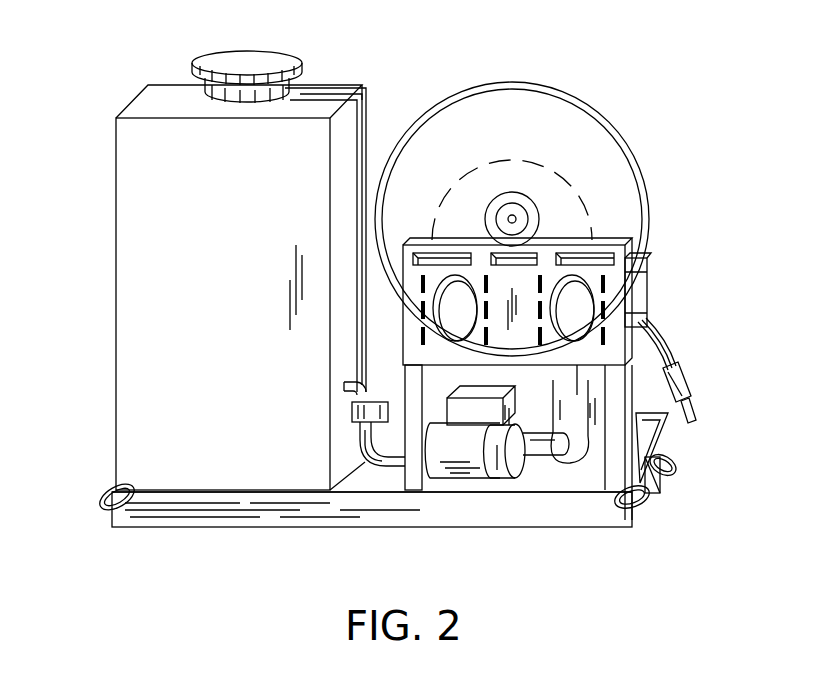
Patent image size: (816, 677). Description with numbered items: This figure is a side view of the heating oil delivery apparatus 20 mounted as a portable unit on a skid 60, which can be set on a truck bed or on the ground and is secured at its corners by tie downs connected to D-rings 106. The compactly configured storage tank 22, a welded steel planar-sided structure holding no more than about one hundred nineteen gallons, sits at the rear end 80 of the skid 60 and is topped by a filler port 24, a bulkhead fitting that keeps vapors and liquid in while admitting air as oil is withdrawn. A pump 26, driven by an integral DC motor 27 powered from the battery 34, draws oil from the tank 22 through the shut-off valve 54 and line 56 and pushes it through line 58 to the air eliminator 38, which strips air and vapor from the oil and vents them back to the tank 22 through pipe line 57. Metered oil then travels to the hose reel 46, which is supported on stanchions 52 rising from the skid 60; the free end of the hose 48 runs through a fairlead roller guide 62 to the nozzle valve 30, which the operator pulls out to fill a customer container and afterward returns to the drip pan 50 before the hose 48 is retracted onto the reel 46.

The apparatus 20 is at (546, 34).
The storage tank 22 is at (118, 287).
The filler port 24 is at (250, 62).
The pump 26 is at (498, 462).
The motor 27 is at (455, 458).
The nozzle valve 30 is at (690, 376).
The battery 34 is at (496, 388).
The air eliminator 38 is at (566, 455).
The hose reel 46 is at (650, 185).
The hose 48 is at (668, 326).
The drip pan 50 is at (646, 441).
The stanchions 52 is at (411, 346).
The shut-off valve 54 is at (360, 418).
The line 56 is at (382, 464).
The pipe line 57 is at (370, 102).
The line 58 is at (540, 442).
The skid 60 is at (196, 514).
The guide 62 is at (639, 292).
The rear end 80 is at (107, 515).
The D-rings 106 is at (98, 503).